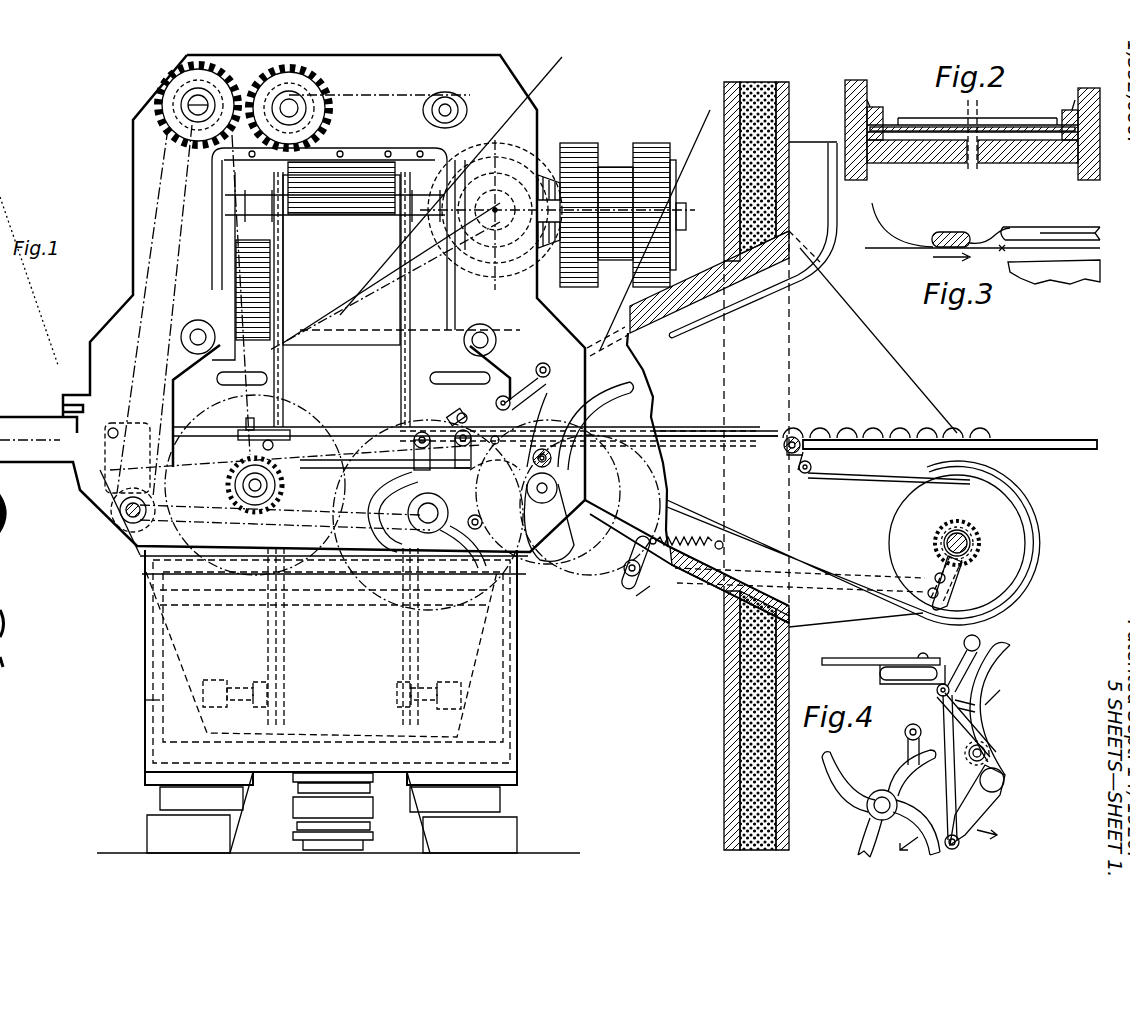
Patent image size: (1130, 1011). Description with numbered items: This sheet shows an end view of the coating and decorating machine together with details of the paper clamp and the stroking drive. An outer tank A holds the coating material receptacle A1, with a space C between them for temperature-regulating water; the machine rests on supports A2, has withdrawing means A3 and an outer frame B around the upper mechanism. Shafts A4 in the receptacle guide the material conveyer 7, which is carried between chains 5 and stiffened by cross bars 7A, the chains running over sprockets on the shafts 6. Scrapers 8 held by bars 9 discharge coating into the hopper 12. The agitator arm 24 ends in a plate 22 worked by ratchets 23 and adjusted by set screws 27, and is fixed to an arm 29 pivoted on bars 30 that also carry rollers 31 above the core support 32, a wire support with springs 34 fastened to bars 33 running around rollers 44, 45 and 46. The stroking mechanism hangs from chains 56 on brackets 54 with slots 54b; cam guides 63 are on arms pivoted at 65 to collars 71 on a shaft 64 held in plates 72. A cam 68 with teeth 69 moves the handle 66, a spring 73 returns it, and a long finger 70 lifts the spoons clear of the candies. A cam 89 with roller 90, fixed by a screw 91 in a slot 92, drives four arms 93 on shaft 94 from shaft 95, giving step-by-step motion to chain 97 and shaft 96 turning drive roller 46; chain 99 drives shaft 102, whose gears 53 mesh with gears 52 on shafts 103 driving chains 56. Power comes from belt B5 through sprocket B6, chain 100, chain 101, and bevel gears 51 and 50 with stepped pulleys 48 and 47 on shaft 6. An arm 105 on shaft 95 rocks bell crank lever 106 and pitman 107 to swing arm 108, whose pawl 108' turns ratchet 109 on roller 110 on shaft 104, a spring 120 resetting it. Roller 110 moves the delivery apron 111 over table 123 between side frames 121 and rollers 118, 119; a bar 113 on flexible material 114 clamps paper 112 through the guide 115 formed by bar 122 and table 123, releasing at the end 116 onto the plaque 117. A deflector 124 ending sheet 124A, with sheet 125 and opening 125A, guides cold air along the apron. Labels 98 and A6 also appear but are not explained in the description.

In FIG. 1, the chains 5 is at (265, 600).
In FIG. 1, the shaft 6 is at (226, 203).
In FIG. 1, the material conveyer 7 is at (329, 287).
In FIG. 1, the cross bars 7A is at (285, 636).
In FIG. 1, the scrapers 8 is at (285, 168).
In FIG. 1, the bars 9 is at (470, 168).
In FIG. 1, the hopper 12 is at (358, 318).
In FIG. 1, the plate 22 is at (234, 434).
In FIG. 1, the ratchets 23 is at (233, 484).
In FIG. 1, the agitator arm 24 is at (274, 445).
In FIG. 1, the set screws 27 is at (250, 422).
In FIG. 1, the arm 29 is at (386, 425).
In FIG. 1, the bars 30 is at (495, 477).
In FIG. 1, the rollers 31 is at (442, 412).
In FIG. 1, the core support 32 is at (105, 470).
In FIG. 1, the bar 33 is at (127, 458).
In FIG. 1, the springs 34 is at (138, 438).
In FIG. 1, the roller 44 is at (533, 458).
In FIG. 1, the roller 45 is at (88, 402).
In FIG. 1, the drive roller 46 is at (126, 549).
In FIG. 1, the stepped pulley 47 is at (647, 146).
In FIG. 1, the stepped pulley 48 is at (585, 146).
In FIG. 1, the bevel gear 50 is at (550, 178).
In FIG. 1, the bevel gear 51 is at (513, 158).
In FIG. 1, the gears 52 is at (327, 84).
In FIG. 1, the gears 53 is at (114, 100).
In FIG. 1, the brackets 54 is at (440, 93).
In FIG. 4, the brackets 54 is at (880, 666).
In FIG. 4, the slots 54b is at (885, 682).
In FIG. 1, the chains 56 is at (215, 250).
In FIG. 1, the cam guides 63 is at (496, 404).
In FIG. 4, the cam guides 63 is at (936, 691).
In FIG. 1, the shaft 64 is at (442, 450).
In FIG. 1, the pivots 65 is at (484, 440).
In FIG. 4, the pivots 65 is at (927, 744).
In FIG. 1, the handle 66 is at (536, 368).
In FIG. 1, the cam 68 is at (579, 458).
In FIG. 4, the cam 68 is at (985, 712).
In FIG. 1, the projections 69 is at (549, 379).
In FIG. 4, the projections 69 is at (987, 713).
In FIG. 1, the long finger 70 is at (605, 393).
In FIG. 4, the long finger 70 is at (1003, 660).
In FIG. 1, the collars 71 is at (448, 403).
In FIG. 1, the plates 72 is at (482, 524).
In FIG. 1, the spring 73 is at (534, 405).
In FIG. 1, the cam 89 is at (543, 504).
In FIG. 4, the cam 89 is at (990, 806).
In FIG. 4, the roller 90 is at (1013, 704).
In FIG. 4, the screw 91 is at (987, 750).
In FIG. 4, the slot 92 is at (963, 767).
In FIG. 1, the arms 93 is at (380, 506).
In FIG. 4, the arms 93 is at (912, 805).
In FIG. 1, the shaft 94 is at (433, 524).
In FIG. 4, the shaft 94 is at (880, 797).
In FIG. 1, the shaft 95 is at (547, 500).
In FIG. 4, the shaft 95 is at (998, 772).
In FIG. 1, the shaft 96 is at (120, 512).
In FIG. 1, the chain 97 is at (230, 525).
In FIG. 1, the shaft 98 is at (247, 490).
In FIG. 1, the chain 99 is at (168, 178).
In FIG. 1, the sprocket chain 100 is at (356, 292).
In FIG. 1, the chain 101 is at (285, 531).
In FIG. 1, the shaft 102 is at (194, 100).
In FIG. 1, the shafts 103 is at (298, 112).
In FIG. 1, the shaft 104 is at (957, 533).
In FIG. 1, the arm 105 is at (590, 505).
In FIG. 1, the bell crank lever 106 is at (628, 552).
In FIG. 1, the pitman 107 is at (690, 580).
In FIG. 1, the arm 108 is at (961, 583).
In FIG. 1, the pawl 108' is at (927, 572).
In FIG. 1, the ratchet 109 is at (975, 545).
In FIG. 1, the roller 110 is at (889, 528).
In FIG. 1, the delivery apron 111 is at (876, 479).
In FIG. 3, the delivery apron 111 is at (890, 250).
In FIG. 1, the paper 112 is at (910, 430).
In FIG. 2, the paper 112 is at (905, 125).
In FIG. 3, the paper 112 is at (880, 226).
In FIG. 2, the bar 113 is at (935, 125).
In FIG. 3, the bar 113 is at (975, 238).
In FIG. 3, the flexible material 114 is at (1010, 228).
In FIG. 1, the guide 115 is at (763, 430).
In FIG. 2, the guide 115 is at (880, 108).
In FIG. 3, the guide 115 is at (1080, 235).
In FIG. 1, the end of guide 116 is at (798, 436).
In FIG. 1, the plaque 117 is at (1010, 440).
In FIG. 1, the roller 118 is at (812, 467).
In FIG. 1, the roller 119 is at (788, 452).
In FIG. 1, the spring 120 is at (690, 538).
In FIG. 1, the side frame 121 is at (921, 392).
In FIG. 2, the side frame 121 is at (845, 92).
In FIG. 2, the bar 122 is at (868, 104).
In FIG. 3, the bar 122 is at (1101, 250).
In FIG. 1, the table 123 is at (680, 445).
In FIG. 2, the table 123 is at (880, 160).
In FIG. 1, the curved deflector 124 is at (600, 333).
In FIG. 1, the metal sheet 124A is at (632, 336).
In FIG. 1, the metal sheet 125 is at (735, 306).
In FIG. 1, the opening 125A is at (818, 142).
In FIG. 1, the outer tank A is at (517, 657).
In FIG. 1, the coating material receptacle A1 is at (482, 628).
In FIG. 1, the supports A2 is at (503, 808).
In FIG. 1, the withdrawing means A3 is at (376, 815).
In FIG. 1, the shafts A4 is at (423, 693).
In FIG. 1, the line A6 is at (29, 288).
In FIG. 1, the outer frame B is at (130, 292).
In FIG. 1, the belt B5 is at (655, 230).
In FIG. 1, the sprocket wheel B6 is at (495, 215).
In FIG. 1, the space C is at (162, 690).